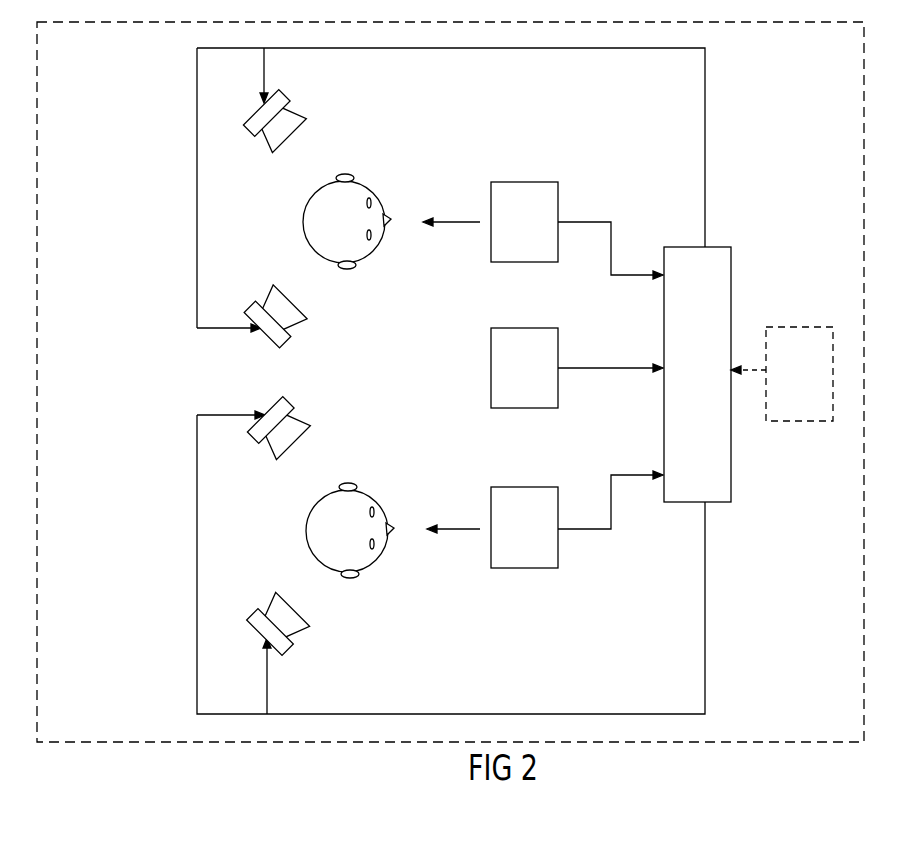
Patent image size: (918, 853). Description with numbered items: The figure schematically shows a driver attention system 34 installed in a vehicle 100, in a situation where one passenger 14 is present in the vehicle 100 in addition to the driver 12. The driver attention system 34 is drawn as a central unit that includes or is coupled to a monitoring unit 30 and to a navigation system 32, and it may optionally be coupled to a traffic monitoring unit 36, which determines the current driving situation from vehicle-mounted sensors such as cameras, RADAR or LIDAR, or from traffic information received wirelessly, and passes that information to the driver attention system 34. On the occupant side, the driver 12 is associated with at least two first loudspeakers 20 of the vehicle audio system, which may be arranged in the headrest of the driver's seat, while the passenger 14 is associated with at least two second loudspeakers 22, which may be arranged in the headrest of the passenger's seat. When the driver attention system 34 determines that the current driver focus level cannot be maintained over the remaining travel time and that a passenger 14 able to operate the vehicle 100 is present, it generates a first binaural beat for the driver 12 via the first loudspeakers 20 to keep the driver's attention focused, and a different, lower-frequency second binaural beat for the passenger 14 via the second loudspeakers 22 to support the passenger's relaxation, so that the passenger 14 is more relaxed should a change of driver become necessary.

The vehicle 100 is at (450, 382).
The driver 12 is at (362, 178).
The passenger 14 is at (364, 490).
The first loudspeakers 20 is at (292, 110).
The second loudspeakers 22 is at (290, 417).
The monitoring unit 30 is at (513, 231).
The navigation system 32 is at (514, 377).
The driver attention system 34 is at (687, 377).
The traffic monitoring unit 36 is at (791, 382).